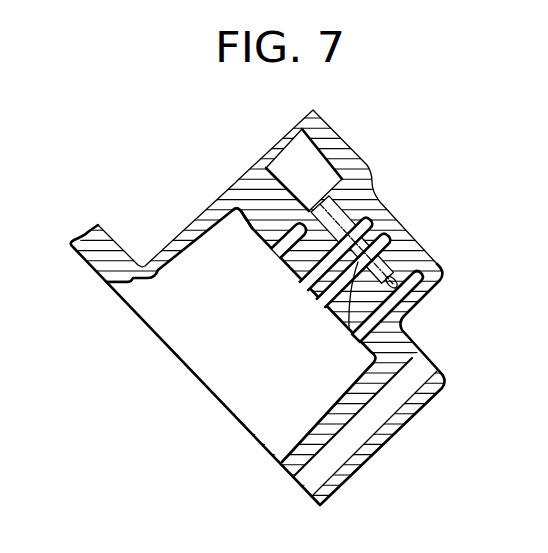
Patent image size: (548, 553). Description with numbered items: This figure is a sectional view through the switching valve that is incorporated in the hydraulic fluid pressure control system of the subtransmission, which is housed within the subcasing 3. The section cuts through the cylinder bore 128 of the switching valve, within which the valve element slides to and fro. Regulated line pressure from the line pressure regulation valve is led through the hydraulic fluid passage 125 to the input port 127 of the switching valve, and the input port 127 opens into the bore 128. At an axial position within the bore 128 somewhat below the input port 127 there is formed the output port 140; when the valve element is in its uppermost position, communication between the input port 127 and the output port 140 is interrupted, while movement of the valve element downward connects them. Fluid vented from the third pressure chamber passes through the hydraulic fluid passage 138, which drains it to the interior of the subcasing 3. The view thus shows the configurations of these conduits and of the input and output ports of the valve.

The subcasing 3 is at (376, 216).
The hydraulic fluid passage 125 is at (286, 257).
The input port 127 is at (369, 224).
The bore 128 is at (414, 296).
The hydraulic fluid passage 138 is at (248, 236).
The output port 140 is at (349, 325).